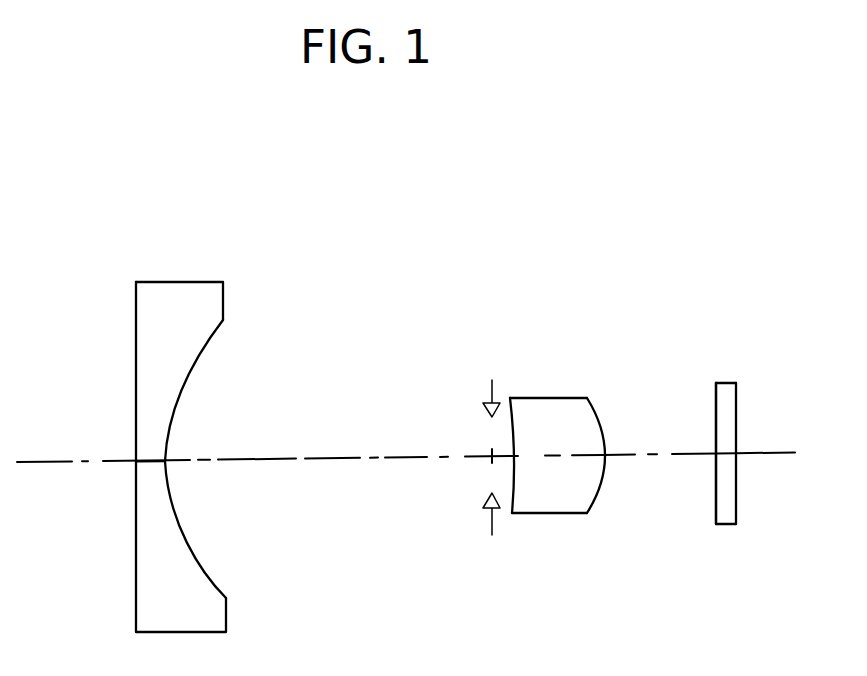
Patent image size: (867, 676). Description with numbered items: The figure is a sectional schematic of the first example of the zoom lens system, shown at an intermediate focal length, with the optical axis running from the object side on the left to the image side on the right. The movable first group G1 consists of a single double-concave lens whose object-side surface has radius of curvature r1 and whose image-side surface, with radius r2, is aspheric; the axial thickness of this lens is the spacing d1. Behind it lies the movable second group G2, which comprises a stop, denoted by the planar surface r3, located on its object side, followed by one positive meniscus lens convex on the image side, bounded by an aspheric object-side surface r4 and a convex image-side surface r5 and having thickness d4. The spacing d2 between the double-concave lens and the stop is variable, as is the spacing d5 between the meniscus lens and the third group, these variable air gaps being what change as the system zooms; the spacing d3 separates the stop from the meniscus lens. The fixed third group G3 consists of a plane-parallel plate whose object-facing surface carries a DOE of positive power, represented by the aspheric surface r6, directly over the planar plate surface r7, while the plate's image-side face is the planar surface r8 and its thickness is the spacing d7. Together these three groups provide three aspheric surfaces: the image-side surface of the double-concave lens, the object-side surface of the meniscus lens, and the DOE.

The first group G1 is at (228, 223).
The second group G2 is at (598, 220).
The third group G3 is at (748, 217).
The radius of curvature of lens surface r1 is at (135, 332).
The radius of curvature of lens surface r2 is at (208, 347).
The radius of curvature of lens surface r3 is at (492, 438).
The radius of curvature of lens surface r4 is at (512, 435).
The radius of curvature of lens surface r5 is at (600, 415).
The radius of curvature of lens surface r6 is at (715, 402).
The radius of curvature of lens surface r7 is at (751, 388).
The radius of curvature of lens surface r8 is at (737, 402).
The spacing between adjacent lens surfaces d1 is at (148, 462).
The spacing between adjacent lens surfaces d2 is at (423, 478).
The spacing between adjacent lens surfaces d3 is at (507, 463).
The spacing between adjacent lens surfaces d4 is at (568, 477).
The spacing between adjacent lens surfaces d5 is at (659, 477).
The spacing between adjacent lens surfaces d7 is at (723, 455).